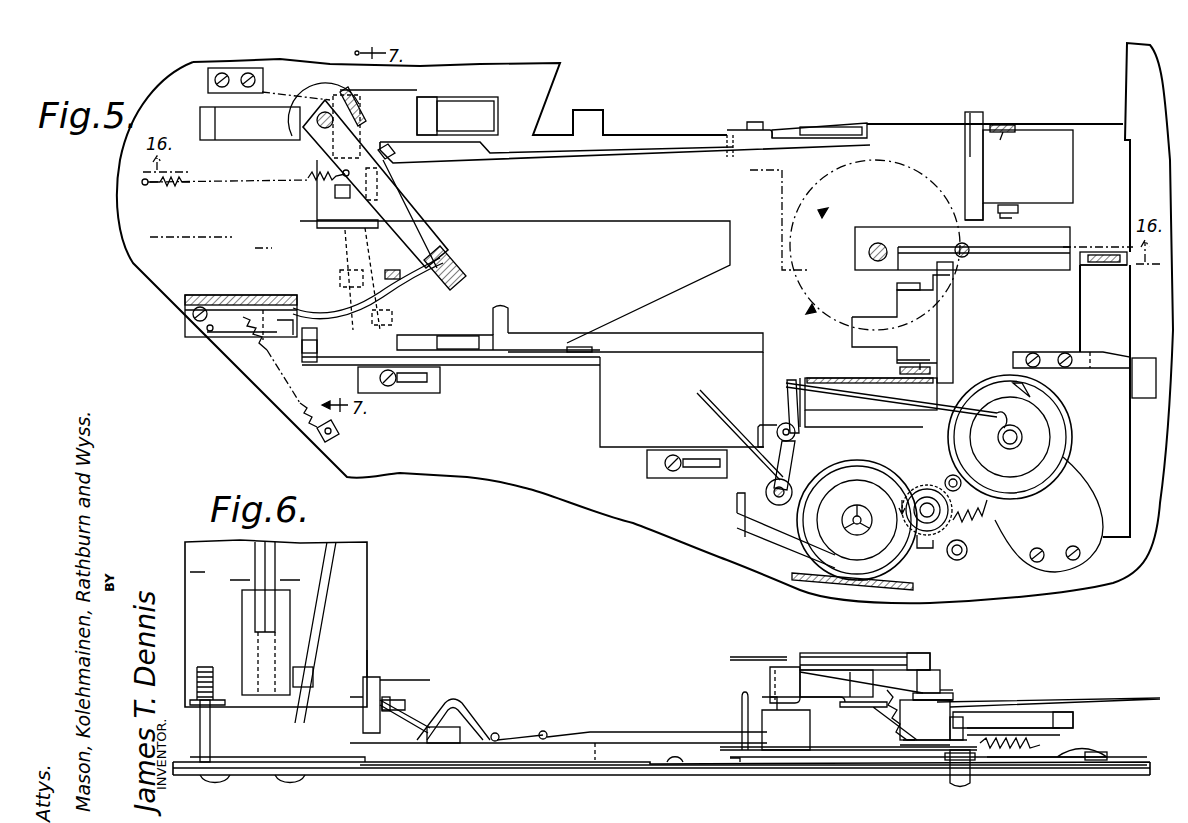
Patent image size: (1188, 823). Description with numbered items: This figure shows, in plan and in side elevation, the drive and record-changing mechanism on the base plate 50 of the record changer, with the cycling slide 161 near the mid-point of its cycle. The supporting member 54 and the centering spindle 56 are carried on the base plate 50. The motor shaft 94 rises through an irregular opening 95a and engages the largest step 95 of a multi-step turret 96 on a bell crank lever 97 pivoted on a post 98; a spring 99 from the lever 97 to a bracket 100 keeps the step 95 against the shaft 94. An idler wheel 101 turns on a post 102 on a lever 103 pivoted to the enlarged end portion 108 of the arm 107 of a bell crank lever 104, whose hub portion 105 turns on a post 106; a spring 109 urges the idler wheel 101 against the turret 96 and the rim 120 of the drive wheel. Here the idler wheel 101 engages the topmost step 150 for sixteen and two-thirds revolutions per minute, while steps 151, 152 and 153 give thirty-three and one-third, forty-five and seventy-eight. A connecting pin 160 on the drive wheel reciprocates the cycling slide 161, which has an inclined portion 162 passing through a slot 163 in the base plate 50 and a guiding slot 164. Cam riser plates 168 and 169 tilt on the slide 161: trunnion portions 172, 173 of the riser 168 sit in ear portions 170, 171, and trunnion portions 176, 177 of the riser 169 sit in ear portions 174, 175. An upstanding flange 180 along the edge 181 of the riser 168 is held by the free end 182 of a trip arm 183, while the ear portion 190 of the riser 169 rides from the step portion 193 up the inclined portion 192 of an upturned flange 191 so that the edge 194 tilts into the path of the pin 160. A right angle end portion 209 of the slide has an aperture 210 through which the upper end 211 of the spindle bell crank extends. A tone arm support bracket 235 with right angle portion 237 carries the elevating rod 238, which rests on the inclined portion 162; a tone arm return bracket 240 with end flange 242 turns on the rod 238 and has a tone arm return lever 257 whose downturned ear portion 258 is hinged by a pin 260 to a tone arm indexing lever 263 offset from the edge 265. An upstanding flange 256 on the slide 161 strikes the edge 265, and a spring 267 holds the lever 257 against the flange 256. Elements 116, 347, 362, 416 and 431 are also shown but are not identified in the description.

In FIG. 5, the base plate 50 is at (468, 465).
In FIG. 6, the base plate 50 is at (760, 776).
In FIG. 5, the supporting member 54 is at (238, 295).
In FIG. 6, the supporting member 54 is at (360, 578).
In FIG. 5, the centering spindle 56 is at (878, 242).
In FIG. 5, the motor shaft 94 is at (1005, 468).
In FIG. 6, the motor shaft 94 is at (950, 712).
In FIG. 5, the largest diameter step 95 is at (930, 488).
In FIG. 6, the largest diameter step 95 is at (903, 730).
In FIG. 5, the irregular opening 95a is at (990, 550).
In FIG. 5, the multi-step turret 96 is at (895, 505).
In FIG. 6, the multi-step turret 96 is at (945, 692).
In FIG. 5, the bell crank lever 97 is at (952, 578).
In FIG. 6, the bell crank lever 97 is at (833, 757).
In FIG. 6, the post 98 is at (948, 762).
In FIG. 5, the spring 99 is at (997, 507).
In FIG. 6, the spring 99 is at (990, 750).
In FIG. 5, the bracket 100 is at (1073, 500).
In FIG. 6, the bracket 100 is at (1085, 758).
In FIG. 5, the idler wheel 101 is at (845, 487).
In FIG. 6, the idler wheel 101 is at (890, 653).
In FIG. 6, the post 102 is at (868, 680).
In FIG. 5, the lever 103 is at (795, 510).
In FIG. 6, the lever 103 is at (825, 708).
In FIG. 5, the bell crank lever 104 is at (775, 408).
In FIG. 5, the hub portion 105 is at (790, 422).
In FIG. 6, the hub portion 105 is at (832, 675).
In FIG. 5, the post 106 is at (798, 436).
In FIG. 5, the arm 107 is at (790, 466).
In FIG. 5, the enlarged end portion 108 is at (766, 492).
In FIG. 6, the enlarged end portion 108 is at (787, 667).
In FIG. 5, the spring 109 is at (948, 558).
In FIG. 6, the spring 109 is at (912, 750).
In FIG. 6, the post 116 is at (277, 720).
In FIG. 5, the rim 120 is at (880, 590).
In FIG. 6, the topmost step 150 is at (930, 668).
In FIG. 6, the step 151 is at (935, 680).
In FIG. 6, the third step 152 is at (942, 695).
In FIG. 6, the step 153 is at (925, 715).
In FIG. 5, the connecting pin 160 is at (968, 248).
In FIG. 5, the cycling slide 161 is at (617, 170).
In FIG. 6, the cycling slide 161 is at (500, 770).
In FIG. 5, the inclined portion 162 is at (472, 104).
In FIG. 5, the slot 163 is at (248, 140).
In FIG. 5, the slot 164 is at (905, 232).
In FIG. 5, the cam riser plate 168 is at (1047, 140).
In FIG. 5, the cam riser plate 169 is at (953, 330).
In FIG. 5, the ear portion 170 is at (1004, 125).
In FIG. 5, the ear portion 171 is at (1016, 216).
In FIG. 5, the trunnion portion 172 is at (997, 142).
In FIG. 5, the trunnion portion 173 is at (1009, 203).
In FIG. 5, the ear portion 174 is at (897, 286).
In FIG. 5, the ear portion 175 is at (900, 369).
In FIG. 5, the trunnion portion 176 is at (900, 292).
In FIG. 5, the trunnion portion 177 is at (917, 352).
In FIG. 5, the upstanding flange 180 is at (965, 120).
In FIG. 5, the edge 181 is at (965, 170).
In FIG. 5, the free end 182 is at (824, 142).
In FIG. 5, the trip arm 183 is at (700, 127).
In FIG. 5, the projecting ear portion 190 is at (1013, 360).
In FIG. 5, the upturned flange 191 is at (870, 392).
In FIG. 5, the inclined portion 192 is at (870, 369).
In FIG. 5, the step portion 193 is at (810, 380).
In FIG. 5, the edge 194 is at (955, 316).
In FIG. 5, the right angle end portion 209 is at (1090, 266).
In FIG. 5, the aperture 210 is at (1116, 267).
In FIG. 5, the upper end 211 is at (1103, 252).
In FIG. 5, the tone arm support bracket 235 is at (249, 70).
In FIG. 5, the right angle portion 237 is at (282, 104).
In FIG. 5, the elevating rod 238 is at (310, 140).
In FIG. 5, the tone arm return bracket 240 is at (348, 92).
In FIG. 5, the end flange 242 is at (360, 140).
In FIG. 5, the upstanding flange 256 is at (335, 226).
In FIG. 6, the upstanding flange 256 is at (368, 650).
In FIG. 5, the tone arm return lever 257 is at (407, 240).
In FIG. 6, the tone arm return lever 257 is at (418, 683).
In FIG. 6, the downturned ear portion 258 is at (410, 672).
In FIG. 6, the pin 260 is at (386, 697).
In FIG. 5, the tone arm indexing lever 263 is at (427, 240).
In FIG. 6, the tone arm indexing lever 263 is at (425, 710).
In FIG. 5, the edge 265 is at (338, 262).
In FIG. 5, the spring 267 is at (168, 186).
In FIG. 5, the spring anchor 347 is at (336, 443).
In FIG. 6, the post 362 is at (366, 705).
In FIG. 5, the block 416 is at (318, 357).
In FIG. 5, the plate 431 is at (577, 347).